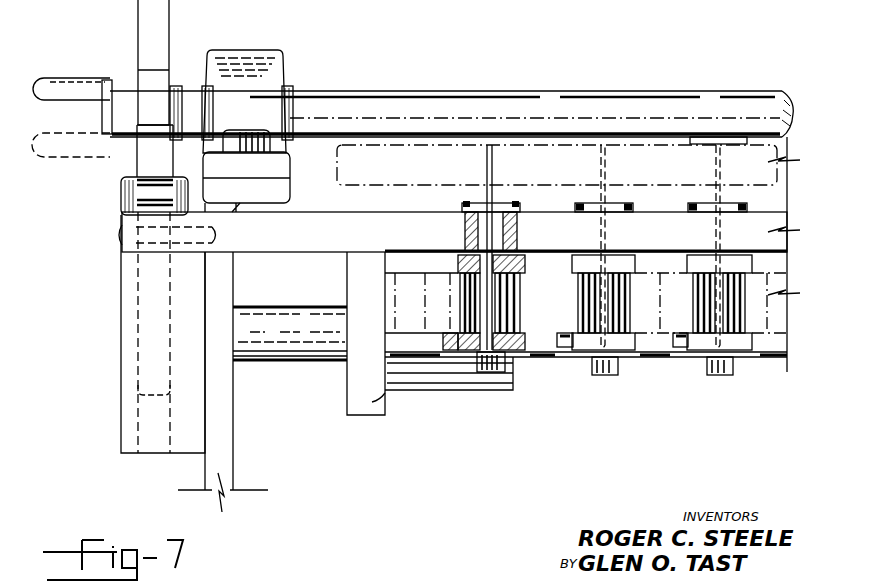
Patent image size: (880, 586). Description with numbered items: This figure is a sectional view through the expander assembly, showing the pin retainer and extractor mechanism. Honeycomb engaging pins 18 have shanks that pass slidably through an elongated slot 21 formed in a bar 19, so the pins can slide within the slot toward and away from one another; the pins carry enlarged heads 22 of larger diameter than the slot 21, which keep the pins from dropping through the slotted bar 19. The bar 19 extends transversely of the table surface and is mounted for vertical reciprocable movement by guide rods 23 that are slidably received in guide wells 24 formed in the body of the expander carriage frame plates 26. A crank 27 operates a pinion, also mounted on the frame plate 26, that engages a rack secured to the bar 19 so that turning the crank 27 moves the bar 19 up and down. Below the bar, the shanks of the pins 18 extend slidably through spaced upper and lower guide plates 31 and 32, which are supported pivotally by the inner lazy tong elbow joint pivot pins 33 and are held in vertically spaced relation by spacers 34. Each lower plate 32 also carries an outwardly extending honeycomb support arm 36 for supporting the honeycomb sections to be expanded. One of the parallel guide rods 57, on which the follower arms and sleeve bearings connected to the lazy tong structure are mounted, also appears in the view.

The pins 18 is at (464, 228).
The bar 19 is at (374, 213).
The elongated slot 21 is at (497, 228).
The enlarged heads 22 is at (512, 205).
The guide rods 23 is at (138, 333).
The guide wells 24 is at (127, 380).
The expander carriage frame plates 26 is at (232, 468).
The crank 27 is at (105, 108).
The upper guide plate 31 is at (457, 262).
The lower guide plate 32 is at (465, 343).
The elbow joint pivot pins 33 is at (490, 372).
The spacers 34 is at (463, 304).
The honeycomb support arm 36 is at (450, 351).
The guide rod 57 is at (290, 350).